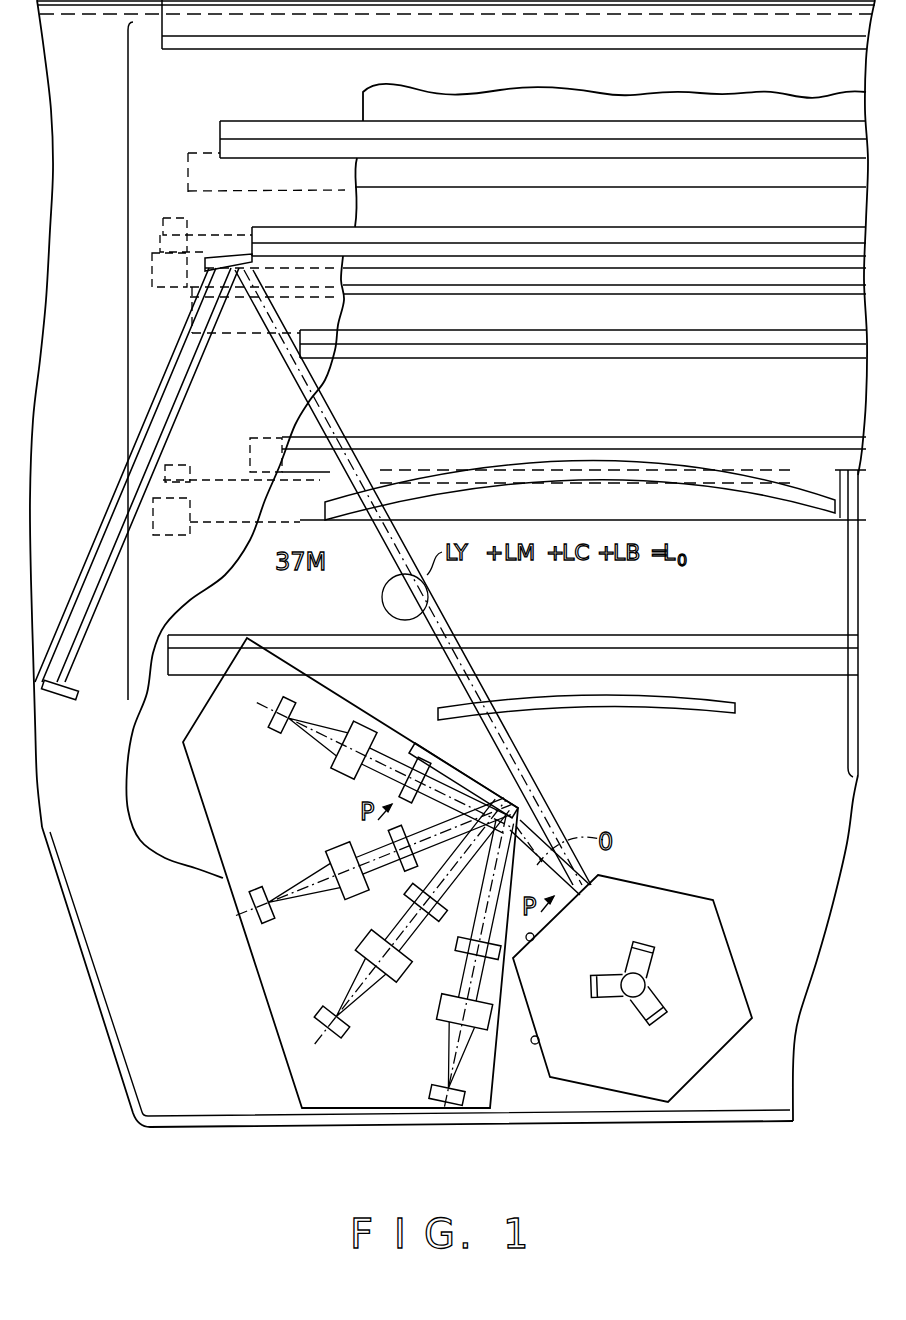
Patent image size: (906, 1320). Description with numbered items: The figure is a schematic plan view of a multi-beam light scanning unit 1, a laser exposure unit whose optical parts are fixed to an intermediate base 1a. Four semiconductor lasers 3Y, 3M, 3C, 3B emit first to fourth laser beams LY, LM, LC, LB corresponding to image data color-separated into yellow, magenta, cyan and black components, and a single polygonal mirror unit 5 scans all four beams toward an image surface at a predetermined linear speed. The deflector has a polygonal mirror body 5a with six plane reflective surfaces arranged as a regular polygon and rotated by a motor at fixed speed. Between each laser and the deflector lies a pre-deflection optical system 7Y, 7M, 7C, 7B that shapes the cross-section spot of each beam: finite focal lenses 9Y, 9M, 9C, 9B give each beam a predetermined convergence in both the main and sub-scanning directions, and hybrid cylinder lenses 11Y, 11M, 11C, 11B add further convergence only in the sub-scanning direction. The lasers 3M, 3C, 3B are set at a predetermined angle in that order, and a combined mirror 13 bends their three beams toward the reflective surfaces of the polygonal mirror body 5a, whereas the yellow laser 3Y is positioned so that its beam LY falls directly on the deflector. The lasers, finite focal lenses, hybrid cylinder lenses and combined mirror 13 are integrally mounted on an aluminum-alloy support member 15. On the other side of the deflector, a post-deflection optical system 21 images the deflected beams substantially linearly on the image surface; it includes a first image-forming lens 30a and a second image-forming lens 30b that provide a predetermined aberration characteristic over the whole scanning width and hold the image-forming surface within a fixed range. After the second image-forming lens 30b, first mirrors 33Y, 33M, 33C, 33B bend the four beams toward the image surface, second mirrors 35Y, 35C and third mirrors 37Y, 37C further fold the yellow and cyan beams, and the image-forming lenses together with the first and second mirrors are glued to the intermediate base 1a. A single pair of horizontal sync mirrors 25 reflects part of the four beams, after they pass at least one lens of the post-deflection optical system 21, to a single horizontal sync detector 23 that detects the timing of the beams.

The multi-beam light scanning unit 1 is at (103, 1024).
The intermediate base 1a is at (165, 862).
The first semiconductor laser 3Y is at (277, 710).
The second semiconductor laser 3M is at (260, 890).
The third semiconductor laser 3C is at (330, 1034).
The fourth semiconductor laser 3B is at (440, 1106).
The polygonal mirror unit 5 is at (730, 908).
The polygonal mirror body 5a is at (645, 988).
The pre-deflection optical system 7Y is at (353, 790).
The pre-deflection optical system 7M is at (377, 900).
The pre-deflection optical system 7C is at (428, 943).
The pre-deflection optical system 7B is at (495, 1020).
The finite focal lens 9Y is at (363, 733).
The finite focal lens 9M is at (340, 852).
The finite focal lens 9C is at (360, 987).
The finite focal lens 9B is at (442, 1035).
The hybrid cylinder lens 11Y is at (417, 763).
The hybrid cylinder lens 11M is at (390, 840).
The hybrid cylinder lens 11C is at (405, 912).
The hybrid cylinder lens 11B is at (447, 972).
The combined mirror 13 is at (470, 782).
The support member 15 is at (272, 1013).
The post-deflection optical system 21 is at (121, 370).
The horizontal sync detector 23 is at (56, 702).
The horizontal sync mirror 25 is at (222, 254).
The first image-forming lens 30a is at (737, 712).
The second image-forming lens 30b is at (753, 502).
The first mirror 33B is at (783, 30).
The first mirror 33C is at (645, 123).
The first mirror 33M is at (745, 226).
The first mirror 33Y is at (650, 356).
The second mirror 35C is at (450, 185).
The second mirror 35Y is at (810, 435).
The third mirror 37C is at (240, 233).
The third mirror 37Y is at (803, 634).
The first laser beam LY is at (80, 645).
The second laser beam LM is at (95, 684).
The third laser beam LC is at (68, 682).
The fourth laser beam LB is at (50, 633).